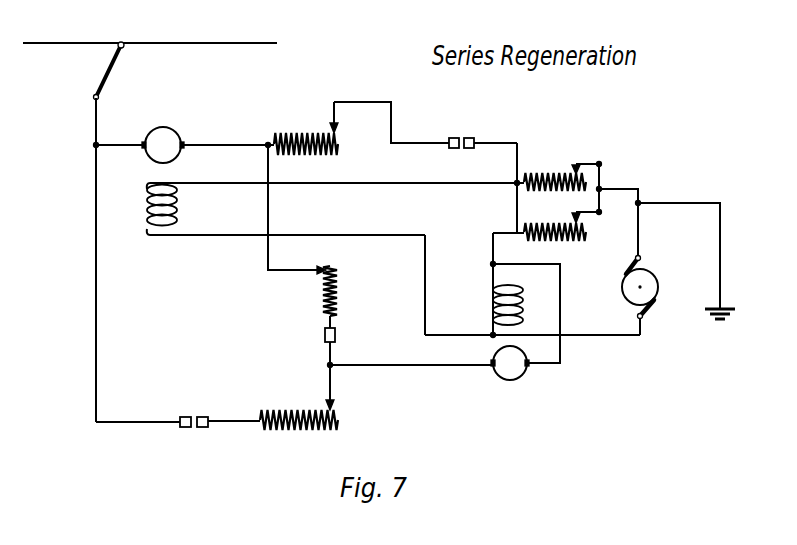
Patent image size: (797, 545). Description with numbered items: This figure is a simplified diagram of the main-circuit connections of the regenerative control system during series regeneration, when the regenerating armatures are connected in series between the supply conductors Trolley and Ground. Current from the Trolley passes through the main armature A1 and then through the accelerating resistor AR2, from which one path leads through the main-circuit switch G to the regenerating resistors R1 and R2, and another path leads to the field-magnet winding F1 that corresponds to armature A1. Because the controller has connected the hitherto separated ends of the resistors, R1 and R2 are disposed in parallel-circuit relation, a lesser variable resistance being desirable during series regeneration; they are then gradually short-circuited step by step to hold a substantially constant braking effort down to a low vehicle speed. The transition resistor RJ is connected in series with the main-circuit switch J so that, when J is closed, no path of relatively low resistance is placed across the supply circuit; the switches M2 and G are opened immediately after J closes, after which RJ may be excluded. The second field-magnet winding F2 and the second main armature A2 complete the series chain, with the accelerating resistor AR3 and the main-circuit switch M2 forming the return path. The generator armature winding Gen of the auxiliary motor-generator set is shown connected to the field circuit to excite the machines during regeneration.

The trolley supply conductor Trolley is at (150, 232).
The main armature A1 is at (181, 145).
The accelerating resistor AR2 is at (358, 128).
The main-circuit switch G is at (483, 171).
The regenerating resistor R1 is at (577, 204).
The regenerating resistor R2 is at (539, 221).
The field-magnet winding F1 is at (321, 259).
The transition resistor RJ is at (320, 230).
The main-circuit switch J is at (409, 363).
The field-magnet winding F2 is at (532, 285).
The main armature A2 is at (525, 322).
The generator armature winding Gen is at (623, 292).
The ground supply conductor Ground is at (691, 279).
The accelerating resistor AR3 is at (273, 405).
The main-circuit switch M2 is at (152, 436).